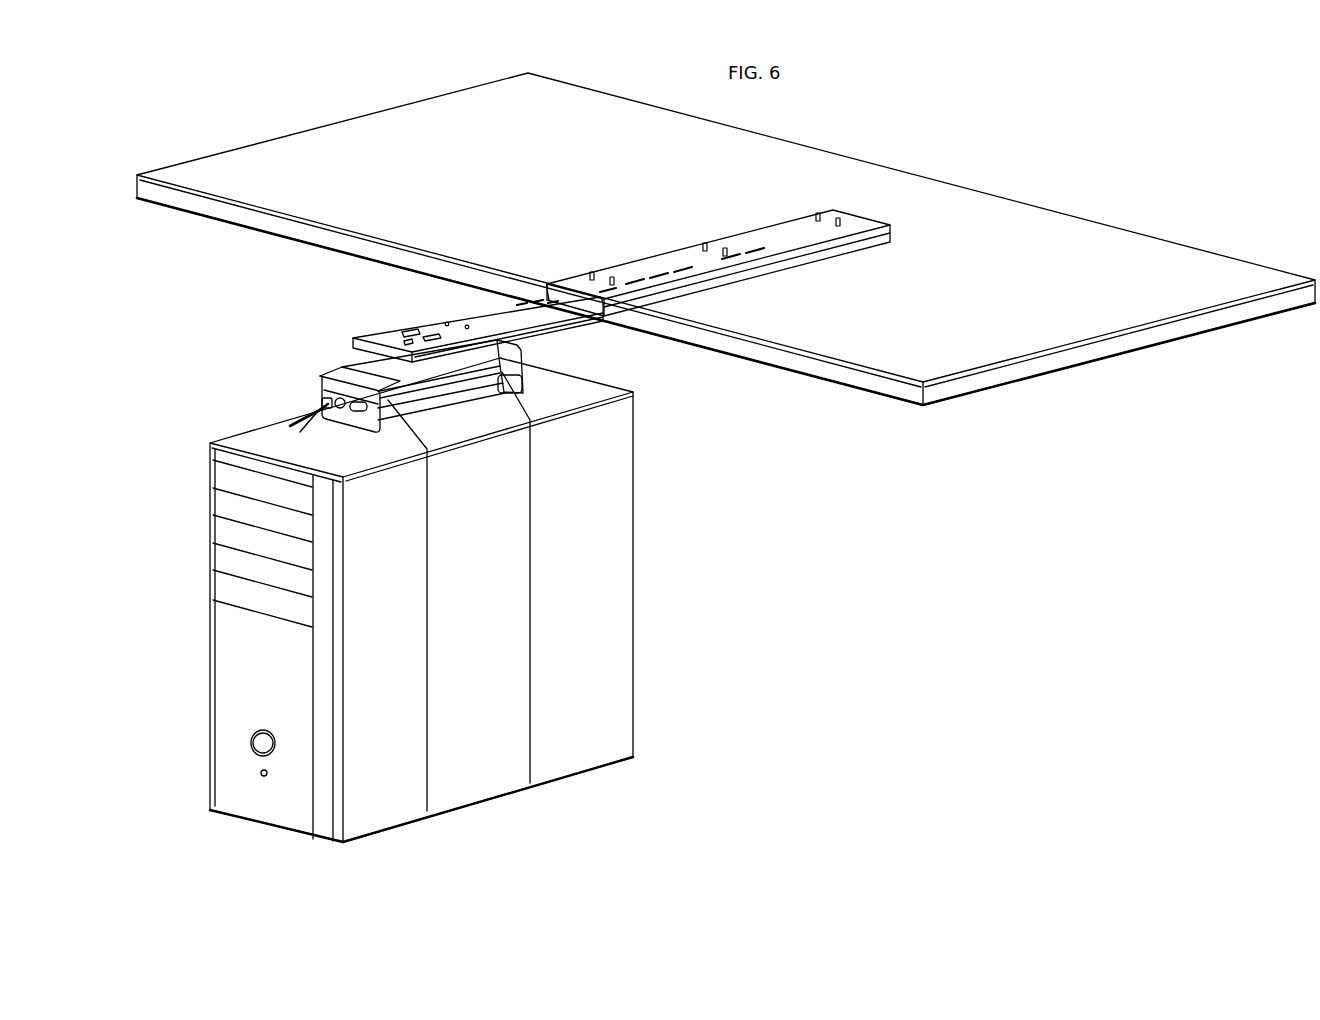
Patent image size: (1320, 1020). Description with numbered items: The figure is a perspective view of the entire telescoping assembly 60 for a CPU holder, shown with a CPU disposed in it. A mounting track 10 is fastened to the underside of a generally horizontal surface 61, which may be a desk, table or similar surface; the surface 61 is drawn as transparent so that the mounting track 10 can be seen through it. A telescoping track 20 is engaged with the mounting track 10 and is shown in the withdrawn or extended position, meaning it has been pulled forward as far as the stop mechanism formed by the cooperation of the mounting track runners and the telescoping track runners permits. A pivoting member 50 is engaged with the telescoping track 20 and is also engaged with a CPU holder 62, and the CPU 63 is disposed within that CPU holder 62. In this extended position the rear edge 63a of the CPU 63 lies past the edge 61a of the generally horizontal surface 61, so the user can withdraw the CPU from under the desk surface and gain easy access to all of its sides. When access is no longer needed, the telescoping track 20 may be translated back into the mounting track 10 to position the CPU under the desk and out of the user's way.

The mounting track 10 is at (707, 280).
The telescoping track 20 is at (437, 324).
The pivoting member 50 is at (372, 365).
The telescoping assembly 60 is at (726, 337).
The generally horizontal surface 61 is at (392, 158).
The edge of generally horizontal surface 61a is at (665, 327).
The CPU holder 62 is at (333, 398).
The CPU 63 is at (432, 600).
The rear edge of CPU 63a is at (633, 612).